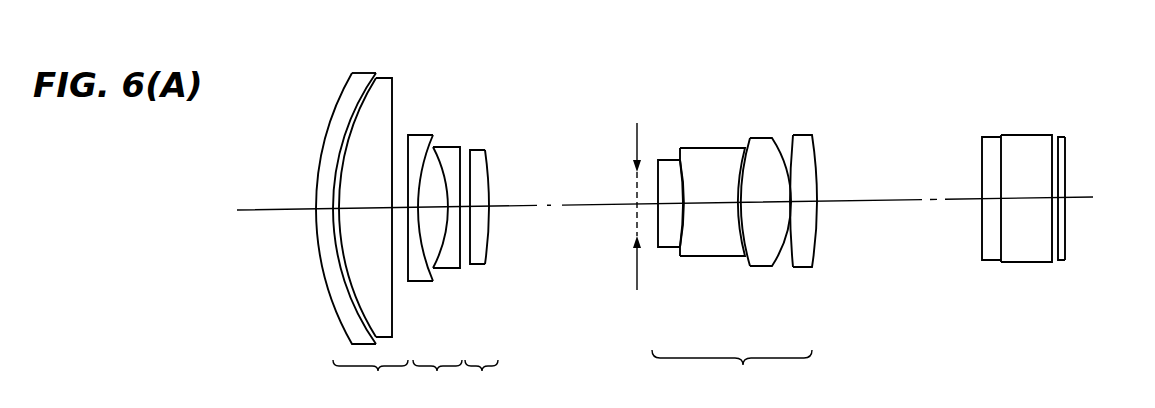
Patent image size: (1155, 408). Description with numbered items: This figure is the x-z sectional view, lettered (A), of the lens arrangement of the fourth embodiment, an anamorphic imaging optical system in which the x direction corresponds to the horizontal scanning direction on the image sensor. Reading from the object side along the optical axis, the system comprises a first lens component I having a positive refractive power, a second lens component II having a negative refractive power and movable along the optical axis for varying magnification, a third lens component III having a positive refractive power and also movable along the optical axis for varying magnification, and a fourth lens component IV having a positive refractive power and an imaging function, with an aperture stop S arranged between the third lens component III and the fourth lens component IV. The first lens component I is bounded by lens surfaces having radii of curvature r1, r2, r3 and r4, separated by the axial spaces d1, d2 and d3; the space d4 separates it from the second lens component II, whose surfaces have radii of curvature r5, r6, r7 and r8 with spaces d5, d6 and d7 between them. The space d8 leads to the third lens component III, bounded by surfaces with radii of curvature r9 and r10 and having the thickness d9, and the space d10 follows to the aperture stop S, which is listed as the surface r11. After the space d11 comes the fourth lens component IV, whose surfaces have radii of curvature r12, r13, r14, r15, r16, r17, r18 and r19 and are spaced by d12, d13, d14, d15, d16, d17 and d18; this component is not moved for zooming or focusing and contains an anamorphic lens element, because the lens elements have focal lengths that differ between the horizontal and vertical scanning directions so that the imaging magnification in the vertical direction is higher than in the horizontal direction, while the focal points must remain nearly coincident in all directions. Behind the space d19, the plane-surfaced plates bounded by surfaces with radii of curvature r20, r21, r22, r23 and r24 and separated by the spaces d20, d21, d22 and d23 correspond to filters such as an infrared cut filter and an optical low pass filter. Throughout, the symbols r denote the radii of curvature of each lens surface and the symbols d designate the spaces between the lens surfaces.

The first lens component I is at (338, 217).
The second lens component II is at (451, 229).
The third lens component III is at (501, 240).
The fourth lens component IV is at (758, 228).
The aperture stop S is at (610, 194).
The radius of curvature of the first lens surface r1 is at (327, 117).
The radius of curvature of the second lens surface r2 is at (359, 111).
The radius of curvature of the third lens surface r3 is at (370, 80).
The radius of curvature of the fourth lens surface r4 is at (392, 85).
The radius of curvature of the fifth lens surface r5 is at (407, 133).
The radius of curvature of the sixth lens surface r6 is at (427, 166).
The radius of curvature of the seventh lens surface r7 is at (438, 165).
The radius of curvature of the eighth lens surface r8 is at (462, 150).
The radius of curvature of the ninth lens surface r9 is at (472, 152).
The radius of curvature of the tenth lens surface r10 is at (487, 160).
The radius of curvature of the eleventh surface r11 is at (635, 143).
The radius of curvature of the twelfth lens surface r12 is at (657, 160).
The radius of curvature of the thirteenth lens surface r13 is at (670, 180).
The radius of curvature of the fourteenth lens surface r14 is at (684, 165).
The radius of curvature of the fifteenth lens surface r15 is at (742, 150).
The radius of curvature of the sixteenth lens surface r16 is at (750, 138).
The radius of curvature of the seventeenth lens surface r17 is at (774, 137).
The radius of curvature of the eighteenth lens surface r18 is at (790, 138).
The radius of curvature of the nineteenth lens surface r19 is at (813, 147).
The radius of curvature of the twentieth surface r20 is at (980, 160).
The radius of curvature of the twenty-first surface r21 is at (1000, 150).
The radius of curvature of the twenty-second surface r22 is at (1048, 138).
The radius of curvature of the twenty-third surface r23 is at (1063, 140).
The radius of curvature of the twenty-fourth surface r24 is at (1067, 155).
The space between the first and second lens surfaces d1 is at (318, 217).
The space between the second and third lens surfaces d2 is at (332, 248).
The space between the third and fourth lens surfaces d3 is at (350, 297).
The space between the fourth and fifth lens surfaces d4 is at (399, 253).
The space between the fifth and sixth lens surfaces d5 is at (421, 272).
The space between the sixth and seventh lens surfaces d6 is at (444, 267).
The space between the seventh and eighth lens surfaces d7 is at (455, 262).
The space between the eighth and ninth lens surfaces d8 is at (465, 255).
The space between the ninth and tenth lens surfaces d9 is at (480, 233).
The space between the tenth and eleventh surfaces d10 is at (565, 205).
The space between the eleventh and twelfth surfaces d11 is at (639, 220).
The space between the twelfth and thirteenth lens surfaces d12 is at (664, 246).
The space between the thirteenth and fourteenth lens surfaces d13 is at (687, 248).
The space between the fourteenth and fifteenth lens surfaces d14 is at (717, 250).
The space between the fifteenth and sixteenth lens surfaces d15 is at (739, 248).
The space between the sixteenth and seventeenth lens surfaces d16 is at (765, 205).
The space between the seventeenth and eighteenth lens surfaces d17 is at (793, 205).
The space between the eighteenth and nineteenth lens surfaces d18 is at (813, 220).
The space between the nineteenth and twentieth surfaces d19 is at (890, 201).
The space between the twentieth and twenty-first surfaces d20 is at (988, 204).
The space between the twenty-first and twenty-second surfaces d21 is at (1022, 200).
The space between the twenty-second and twenty-third surfaces d22 is at (1055, 203).
The space between the twenty-third and twenty-fourth surfaces d23 is at (1068, 207).